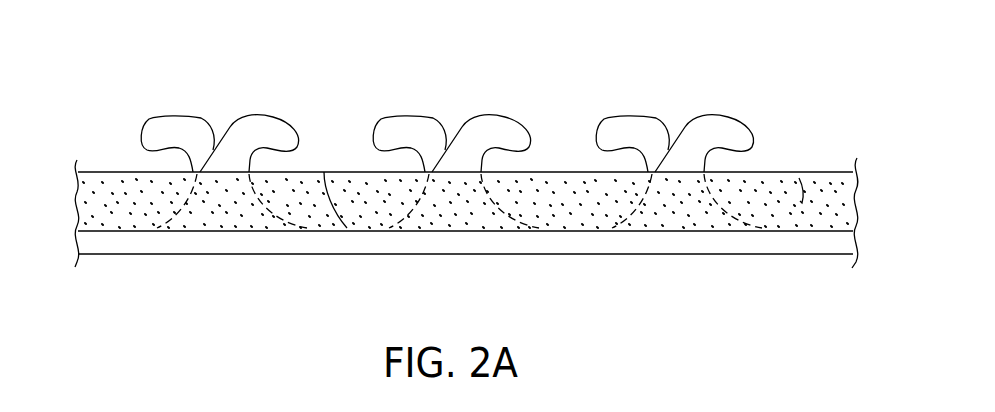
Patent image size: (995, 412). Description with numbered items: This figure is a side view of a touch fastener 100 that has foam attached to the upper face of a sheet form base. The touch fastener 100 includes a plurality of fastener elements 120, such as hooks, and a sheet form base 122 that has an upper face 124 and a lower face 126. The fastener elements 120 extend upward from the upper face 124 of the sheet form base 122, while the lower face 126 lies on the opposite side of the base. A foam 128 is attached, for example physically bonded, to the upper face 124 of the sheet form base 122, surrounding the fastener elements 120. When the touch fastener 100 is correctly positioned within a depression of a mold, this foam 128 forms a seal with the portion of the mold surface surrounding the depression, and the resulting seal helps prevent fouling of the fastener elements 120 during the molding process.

The touch fastener 100 is at (688, 88).
The fastener elements 120 is at (423, 117).
The sheet form base 122 is at (573, 255).
The upper face 124 is at (324, 172).
The lower face 126 is at (237, 255).
The foam 128 is at (799, 178).